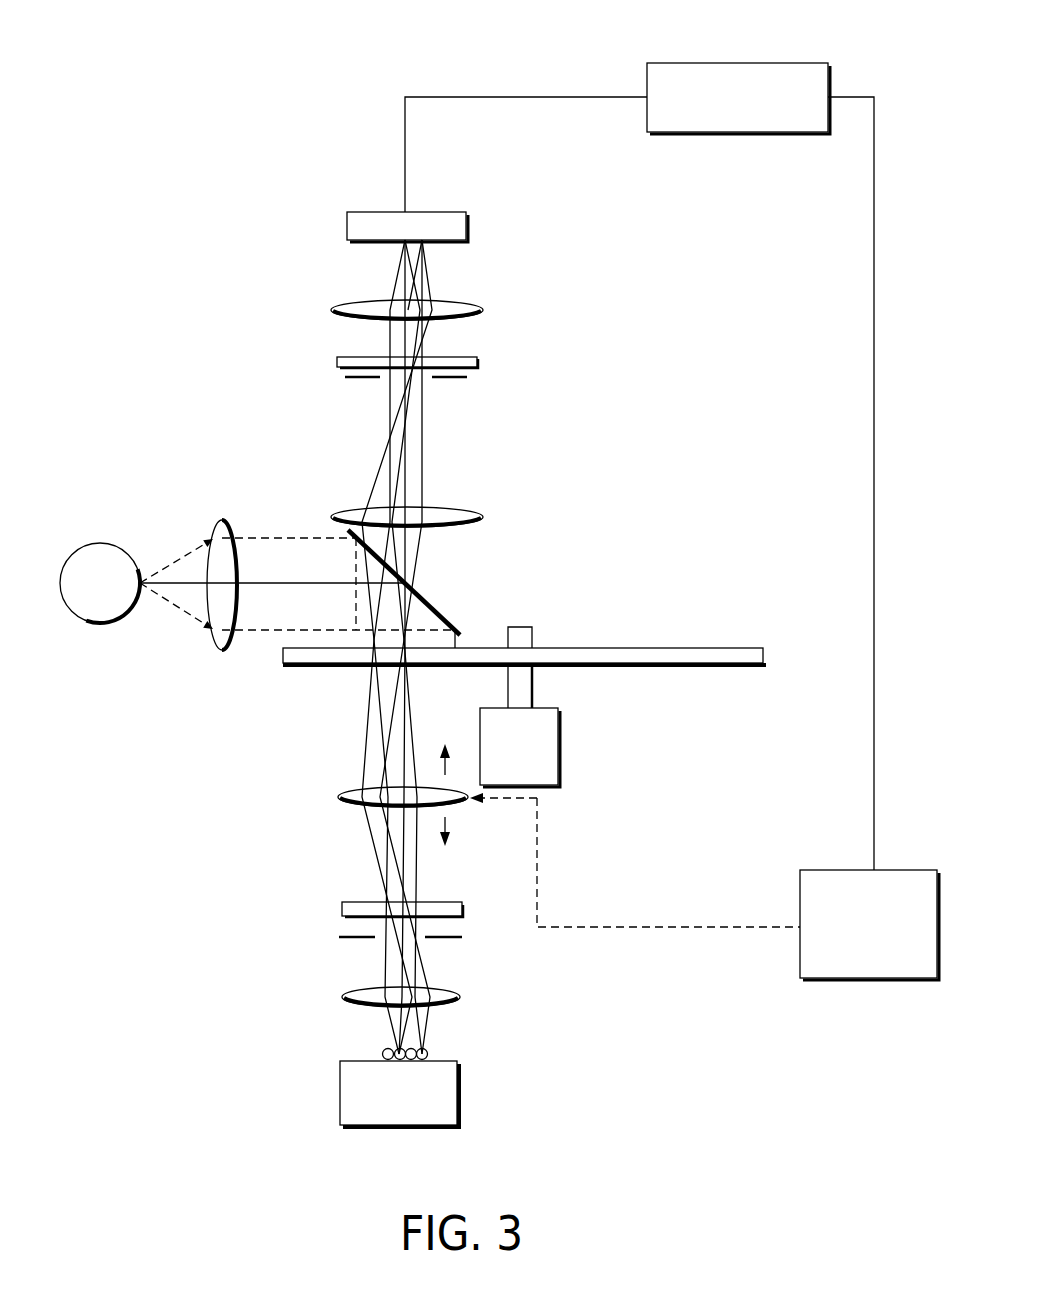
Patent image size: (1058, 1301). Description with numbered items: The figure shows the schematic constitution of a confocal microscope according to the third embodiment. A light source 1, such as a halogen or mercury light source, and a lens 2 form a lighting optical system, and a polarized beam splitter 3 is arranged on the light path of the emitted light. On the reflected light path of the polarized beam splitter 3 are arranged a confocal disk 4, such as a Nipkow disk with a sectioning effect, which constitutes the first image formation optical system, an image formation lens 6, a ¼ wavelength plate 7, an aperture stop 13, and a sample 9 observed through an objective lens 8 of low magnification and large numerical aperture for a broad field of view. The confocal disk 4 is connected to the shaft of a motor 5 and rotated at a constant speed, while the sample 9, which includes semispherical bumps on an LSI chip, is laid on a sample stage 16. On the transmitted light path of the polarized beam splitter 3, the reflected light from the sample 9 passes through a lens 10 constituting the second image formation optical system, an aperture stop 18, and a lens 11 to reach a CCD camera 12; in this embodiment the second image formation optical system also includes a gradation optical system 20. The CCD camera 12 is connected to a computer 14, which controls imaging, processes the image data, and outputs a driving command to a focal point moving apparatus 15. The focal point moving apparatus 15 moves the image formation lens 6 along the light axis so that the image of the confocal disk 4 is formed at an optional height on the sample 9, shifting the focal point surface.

The light source 1 is at (88, 622).
The lens 2 is at (215, 646).
The polarized beam splitter 3 is at (433, 602).
The confocal disk 4 is at (726, 668).
The motor 5 is at (560, 763).
The image formation lens 6 is at (338, 797).
The ¼ wavelength plate 7 is at (342, 908).
The objective lens 8 is at (342, 996).
The sample 9 is at (384, 1049).
The lens 10 is at (332, 517).
The lens 11 is at (332, 312).
The CCD camera 12 is at (347, 226).
The aperture stop 13 is at (339, 937).
The computer 14 is at (779, 63).
The focal point moving apparatus 15 is at (862, 979).
The sample stage 16 is at (340, 1106).
The aperture stop 18 is at (358, 378).
The gradation optical system 20 is at (478, 362).